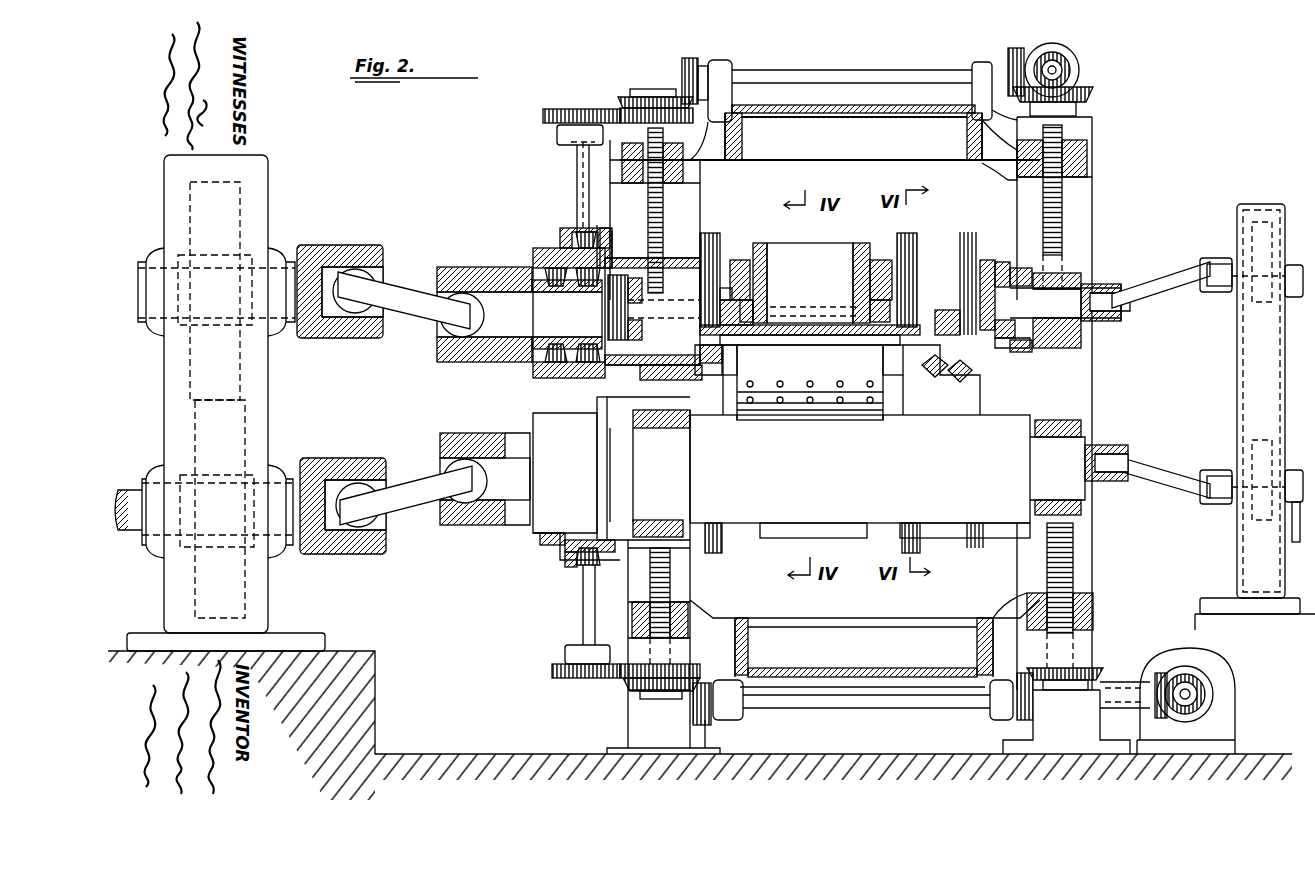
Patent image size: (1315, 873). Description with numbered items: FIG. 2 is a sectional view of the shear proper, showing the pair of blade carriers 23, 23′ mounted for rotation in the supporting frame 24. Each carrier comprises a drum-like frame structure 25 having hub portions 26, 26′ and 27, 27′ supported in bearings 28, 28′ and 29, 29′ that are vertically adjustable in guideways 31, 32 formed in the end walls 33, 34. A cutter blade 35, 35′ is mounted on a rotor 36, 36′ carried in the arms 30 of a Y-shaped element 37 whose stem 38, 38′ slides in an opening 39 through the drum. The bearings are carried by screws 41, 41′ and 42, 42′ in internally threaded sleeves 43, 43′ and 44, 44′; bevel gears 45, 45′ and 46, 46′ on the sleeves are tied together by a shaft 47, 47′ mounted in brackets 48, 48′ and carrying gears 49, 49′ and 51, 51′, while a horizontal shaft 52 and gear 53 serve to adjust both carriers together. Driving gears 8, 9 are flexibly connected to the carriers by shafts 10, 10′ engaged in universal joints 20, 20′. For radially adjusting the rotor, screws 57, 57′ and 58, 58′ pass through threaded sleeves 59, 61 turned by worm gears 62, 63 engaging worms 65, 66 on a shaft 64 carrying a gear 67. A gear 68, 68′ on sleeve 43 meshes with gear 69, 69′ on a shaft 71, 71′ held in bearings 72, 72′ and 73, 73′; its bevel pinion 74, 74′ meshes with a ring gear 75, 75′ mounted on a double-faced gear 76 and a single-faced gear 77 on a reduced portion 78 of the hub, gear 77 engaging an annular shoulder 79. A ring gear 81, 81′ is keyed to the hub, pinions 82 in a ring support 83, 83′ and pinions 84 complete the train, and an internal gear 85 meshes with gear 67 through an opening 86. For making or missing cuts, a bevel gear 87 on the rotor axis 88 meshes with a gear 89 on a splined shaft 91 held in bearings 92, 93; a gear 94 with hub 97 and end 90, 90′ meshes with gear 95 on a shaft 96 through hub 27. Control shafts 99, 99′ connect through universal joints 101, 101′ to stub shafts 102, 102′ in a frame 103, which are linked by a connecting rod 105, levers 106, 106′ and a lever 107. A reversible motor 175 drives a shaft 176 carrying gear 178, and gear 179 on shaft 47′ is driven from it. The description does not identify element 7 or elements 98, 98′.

The stand 7 is at (252, 160).
The gear 8 is at (240, 452).
The gear 9 is at (240, 232).
The shaft 10 is at (410, 300).
The shaft 10′ is at (410, 485).
The universal joints 20 is at (330, 247).
The universal joints 20′ is at (333, 461).
The blade carrier 23 is at (879, 252).
The blade carrier 23′ is at (882, 471).
The supporting frame 24 is at (838, 144).
The drum-like frame structure 25 is at (737, 262).
The hub portion 26 is at (650, 310).
The hub portion 26′ is at (680, 450).
The hub portion 27 is at (1080, 290).
The hub portion 27′ is at (1082, 456).
The bearing 28 is at (655, 377).
The bearing 28′ is at (677, 441).
The bearing 29 is at (1057, 350).
The bearing 29′ is at (1076, 423).
The arms 30 is at (813, 357).
The guideway 31 is at (690, 216).
The guideway 32 is at (1093, 190).
The end wall 33 is at (575, 159).
The end wall 34 is at (1090, 156).
The cutter blade 35 is at (770, 386).
The cutter blade 35′ is at (765, 406).
The rotor 36 is at (796, 371).
The rotor 36′ is at (810, 406).
The Y-shaped element 37 is at (790, 337).
The stem 38 is at (808, 245).
The stem 38′ is at (818, 526).
The opening 39 is at (760, 245).
The screw 41 is at (672, 196).
The screw 41′ is at (670, 583).
The screw 42 is at (1065, 183).
The screw 42′ is at (1073, 566).
The internally threaded sleeve 43 is at (668, 166).
The internally threaded sleeve 43′ is at (690, 608).
The internally threaded sleeve 44 is at (1012, 159).
The internally threaded sleeve 44′ is at (1028, 611).
The bevel gear 45 is at (626, 92).
The bevel gear 45′ is at (640, 692).
The bevel gear 46 is at (1090, 88).
The bevel gear 46′ is at (1098, 668).
The shaft 47 is at (848, 72).
The shaft 47′ is at (856, 708).
The brackets 48 is at (718, 64).
The brackets 48′ is at (742, 716).
The gear 49 is at (690, 58).
The gear 49′ is at (712, 726).
The gear 51 is at (1013, 48).
The gear 51′ is at (1020, 716).
The horizontal shaft 52 is at (1066, 66).
The gear 53 is at (1058, 48).
The screw 57 is at (710, 240).
The screw 57′ is at (722, 552).
The screw 58 is at (906, 235).
The screw 58′ is at (903, 550).
The threaded sleeve 59 is at (745, 290).
The threaded sleeve 61 is at (868, 290).
The worm gear 62 is at (752, 305).
The worm gear 63 is at (870, 306).
The shaft 64 is at (785, 312).
The worm 65 is at (710, 360).
The worm 66 is at (955, 326).
The gear 67 is at (618, 300).
The gear 68 is at (606, 111).
The gear 68′ is at (617, 681).
The gear 69 is at (548, 114).
The gear 69′ is at (556, 680).
The shaft 71 is at (576, 176).
The shaft 71′ is at (582, 612).
The bearing 72 is at (557, 132).
The bearing 72′ is at (565, 653).
The bearing 73 is at (577, 238).
The bearing 73′ is at (578, 568).
The bevel gear pinion 74 is at (560, 248).
The bevel gear pinion 74′ is at (570, 560).
The beveled ring gear 75 is at (598, 225).
The beveled ring gear 75′ is at (597, 445).
The double-faced beveled ring gear 76 is at (570, 288).
The single-faced beveled gear 77 is at (590, 288).
The reduced portion 78 is at (555, 344).
The annular shoulder 79 is at (606, 228).
The ring shaped beveled gear 81 is at (535, 264).
The ring shaped beveled gear 81′ is at (540, 537).
The pinions 82 is at (548, 342).
The ring support 83 is at (540, 252).
The ring support 83′ is at (545, 548).
The pinions 84 is at (588, 344).
The internal gear 85 is at (625, 345).
The opening 86 is at (664, 319).
The bevel gear 87 is at (955, 376).
The axis 88 is at (945, 379).
The gear 89 is at (1025, 348).
The end of hub 90 is at (965, 241).
The end of hub 90′ is at (972, 550).
The splined shaft 91 is at (985, 260).
The bearing 92 is at (1002, 270).
The bearing 93 is at (995, 348).
The gear 94 is at (1035, 350).
The gear 95 is at (1008, 285).
The shaft 96 is at (1100, 326).
The hub 97 is at (994, 262).
The upper universal joint 98 is at (1128, 314).
The lower universal joint 98′ is at (1128, 452).
The shaft 99 is at (1156, 286).
The shaft 99′ is at (1164, 476).
The universal joint 101 is at (1210, 258).
The universal joint 101′ is at (1212, 505).
The stub shaft 102 is at (1258, 262).
The stub shaft 102′ is at (1258, 480).
The supporting frame 103 is at (1245, 206).
The connecting rod 105 is at (1282, 362).
The lever 106 is at (1290, 297).
The lever 106′ is at (1292, 505).
The lever 107 is at (1292, 540).
The reversible motor 175 is at (1226, 668).
The shaft 176 is at (1188, 685).
The gear 178 is at (1192, 694).
The gear 179 is at (1162, 672).